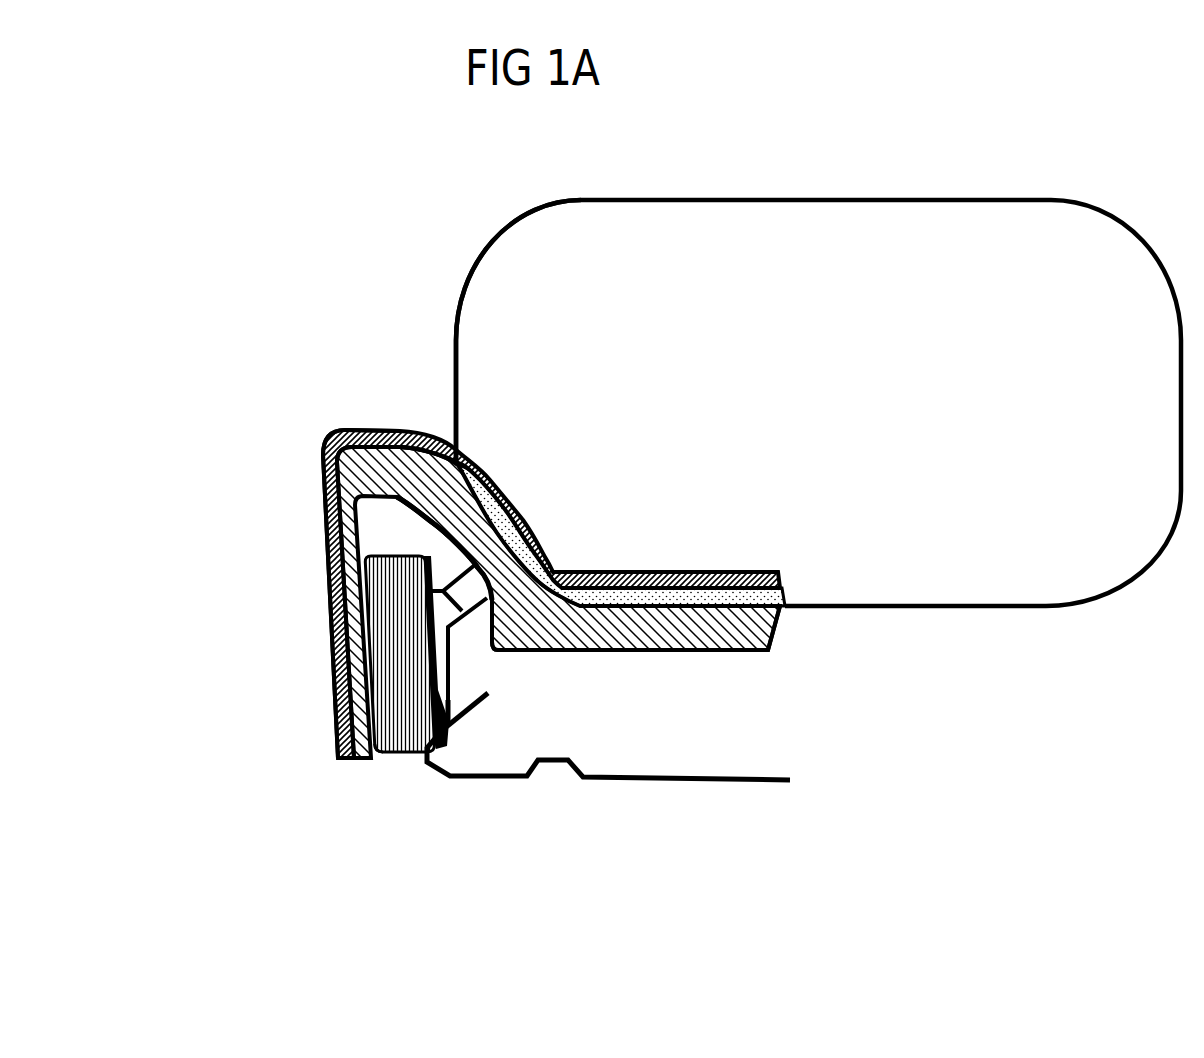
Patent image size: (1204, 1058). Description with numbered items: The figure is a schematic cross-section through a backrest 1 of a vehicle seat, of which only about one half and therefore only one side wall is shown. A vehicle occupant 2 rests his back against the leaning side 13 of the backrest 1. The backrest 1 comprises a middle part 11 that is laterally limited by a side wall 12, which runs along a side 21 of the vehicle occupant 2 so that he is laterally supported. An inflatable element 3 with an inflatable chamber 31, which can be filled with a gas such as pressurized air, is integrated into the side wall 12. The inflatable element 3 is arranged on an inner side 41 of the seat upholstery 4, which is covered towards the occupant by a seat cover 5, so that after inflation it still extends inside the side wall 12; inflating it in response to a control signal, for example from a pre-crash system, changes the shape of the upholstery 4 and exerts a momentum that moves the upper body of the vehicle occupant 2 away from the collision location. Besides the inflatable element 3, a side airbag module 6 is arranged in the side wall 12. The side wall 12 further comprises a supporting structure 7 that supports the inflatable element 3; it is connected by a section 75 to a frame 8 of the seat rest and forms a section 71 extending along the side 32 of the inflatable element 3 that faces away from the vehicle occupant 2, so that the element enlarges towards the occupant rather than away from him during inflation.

The backrest 1 is at (318, 420).
The vehicle occupant 2 is at (935, 220).
The side 21 is at (508, 268).
The leaning side 13 is at (500, 490).
The side wall 12 is at (384, 455).
The seat upholstery 4 is at (413, 480).
The seat cover 5 is at (350, 432).
The inner side 41 is at (352, 487).
The inflatable element 3 is at (390, 508).
The inflatable chamber 31 is at (395, 515).
The side 32 is at (407, 523).
The supporting structure 7 is at (347, 712).
The section 71 is at (428, 590).
The section 75 is at (408, 755).
The side airbag module 6 is at (342, 762).
The frame 8 is at (683, 783).
The middle part 11 is at (771, 660).